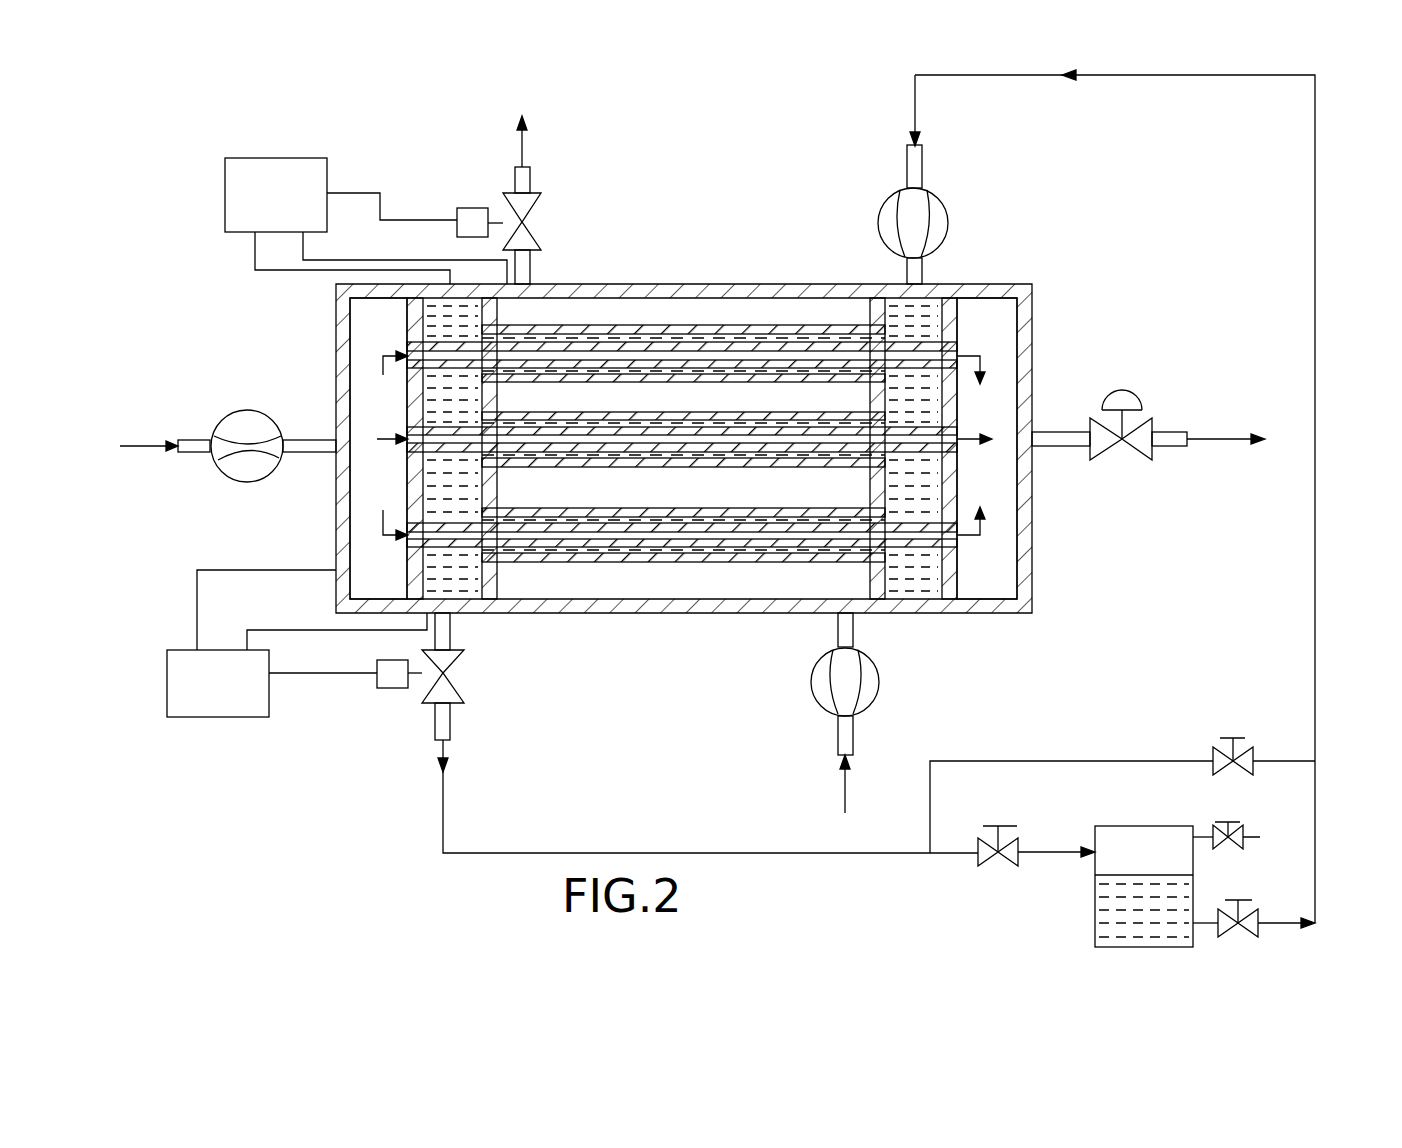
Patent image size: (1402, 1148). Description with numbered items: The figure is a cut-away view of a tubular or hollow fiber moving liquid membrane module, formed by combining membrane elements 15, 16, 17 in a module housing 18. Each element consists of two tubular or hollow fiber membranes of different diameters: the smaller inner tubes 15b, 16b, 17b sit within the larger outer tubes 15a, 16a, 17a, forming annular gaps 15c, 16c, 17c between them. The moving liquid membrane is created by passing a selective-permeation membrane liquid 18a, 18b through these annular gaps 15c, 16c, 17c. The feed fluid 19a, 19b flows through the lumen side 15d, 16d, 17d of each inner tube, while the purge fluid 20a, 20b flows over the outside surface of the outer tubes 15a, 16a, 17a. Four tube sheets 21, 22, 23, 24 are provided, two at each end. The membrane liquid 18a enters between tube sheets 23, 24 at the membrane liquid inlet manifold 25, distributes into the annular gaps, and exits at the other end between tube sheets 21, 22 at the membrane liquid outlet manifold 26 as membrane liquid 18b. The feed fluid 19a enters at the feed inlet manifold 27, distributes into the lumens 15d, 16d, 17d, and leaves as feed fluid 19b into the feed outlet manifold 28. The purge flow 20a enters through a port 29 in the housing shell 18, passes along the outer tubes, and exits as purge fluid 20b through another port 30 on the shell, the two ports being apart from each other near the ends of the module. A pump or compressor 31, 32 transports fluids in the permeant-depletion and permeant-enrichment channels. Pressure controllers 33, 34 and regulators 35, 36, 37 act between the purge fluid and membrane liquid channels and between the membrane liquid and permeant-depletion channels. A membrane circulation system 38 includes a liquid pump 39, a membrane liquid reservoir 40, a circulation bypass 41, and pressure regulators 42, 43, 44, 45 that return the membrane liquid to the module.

The membrane element 15 is at (708, 290).
The outer tube 15a is at (700, 330).
The inner tube 15b is at (890, 338).
The annular gap 15c is at (570, 333).
The lumen side 15d is at (671, 357).
The membrane element 16 is at (705, 397).
The outer tube 16a is at (500, 410).
The inner tube 16b is at (437, 415).
The annular gap 16c is at (543, 423).
The lumen side 16d is at (675, 427).
The membrane element 17 is at (700, 563).
The outer tube 17a is at (598, 565).
The inner tube 17b is at (640, 545).
The annular gap 17c is at (690, 560).
The lumen side 17d is at (671, 512).
The module housing 18 is at (677, 290).
The membrane liquid 18a is at (935, 179).
The membrane liquid 18b is at (708, 796).
The feed fluid 19a is at (225, 431).
The feed fluid 19b is at (1148, 426).
The purge fluid 20a is at (866, 784).
The purge fluid 20b is at (528, 128).
The tube sheet 21 is at (427, 587).
The tube sheet 22 is at (510, 600).
The tube sheet 23 is at (893, 600).
The tube sheet 24 is at (957, 600).
The membrane liquid inlet manifold 25 is at (940, 284).
The membrane liquid outlet manifold 26 is at (438, 327).
The feed inlet manifold 27 is at (365, 528).
The feed outlet manifold 28 is at (1002, 548).
The port 29 is at (840, 728).
The port 30 is at (531, 178).
The pump or compressor 31 is at (227, 412).
The pump or compressor 32 is at (810, 680).
The pressure controller 33 is at (263, 158).
The pressure controller 34 is at (183, 650).
The regulator 35 is at (503, 193).
The regulator 36 is at (432, 733).
The regulator 37 is at (1150, 420).
The membrane circulation system 38 is at (1318, 628).
The liquid pump 39 is at (948, 208).
The membrane liquid reservoir 40 is at (1095, 885).
The circulation bypass 41 is at (1085, 761).
The pressure regulator 42 is at (1225, 738).
The pressure regulator 43 is at (1225, 822).
The pressure regulator 44 is at (1238, 900).
The pressure regulator 45 is at (1000, 826).